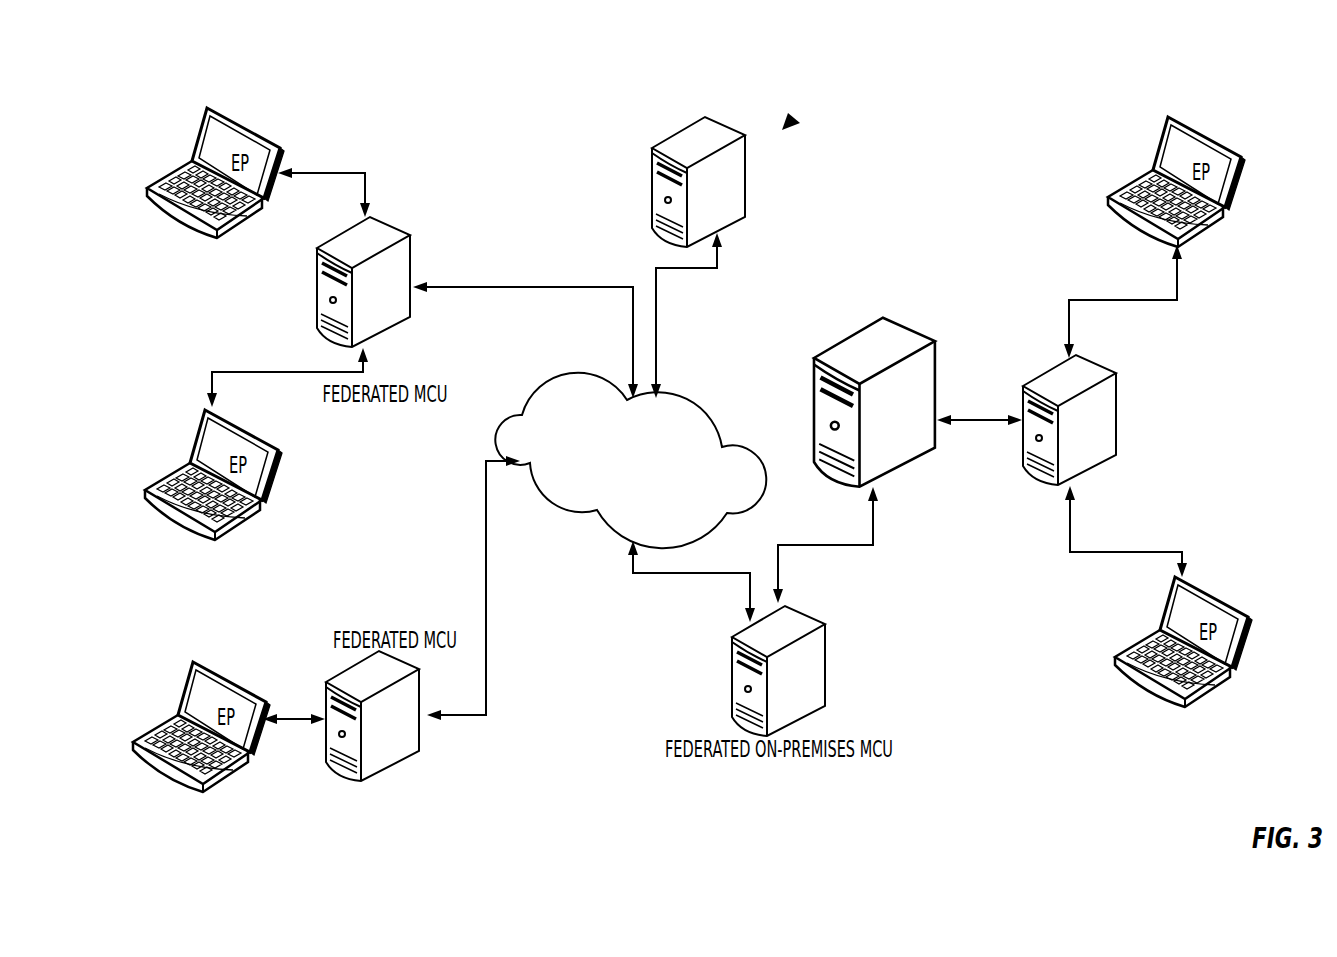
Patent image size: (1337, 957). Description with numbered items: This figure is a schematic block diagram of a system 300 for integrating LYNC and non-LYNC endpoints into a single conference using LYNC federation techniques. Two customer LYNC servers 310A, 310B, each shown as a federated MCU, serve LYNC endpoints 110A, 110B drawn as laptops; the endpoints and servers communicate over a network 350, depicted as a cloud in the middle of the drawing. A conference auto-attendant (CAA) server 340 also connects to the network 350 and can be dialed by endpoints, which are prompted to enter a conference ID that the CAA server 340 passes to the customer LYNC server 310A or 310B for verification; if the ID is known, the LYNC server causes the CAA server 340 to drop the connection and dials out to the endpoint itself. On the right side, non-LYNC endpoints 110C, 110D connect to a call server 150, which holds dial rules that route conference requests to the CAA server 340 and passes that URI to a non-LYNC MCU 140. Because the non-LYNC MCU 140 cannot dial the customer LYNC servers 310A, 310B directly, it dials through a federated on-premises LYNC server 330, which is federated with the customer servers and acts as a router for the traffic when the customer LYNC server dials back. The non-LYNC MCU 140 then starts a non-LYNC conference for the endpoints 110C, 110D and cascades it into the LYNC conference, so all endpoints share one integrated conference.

The endpoint 110A is at (240, 123).
The endpoint 110B is at (245, 520).
The non-LYNC endpoint 110C is at (222, 673).
The non-LYNC endpoint 110D is at (1212, 595).
The non-LYNC MCU 140 is at (908, 330).
The call server 150 is at (1115, 408).
The system 300 is at (792, 118).
The LYNC server 310A is at (400, 227).
The LYNC server 310B is at (400, 760).
The on-premises LYNC server 330 is at (826, 662).
The conference auto-attendant (CAA) server 340 is at (745, 178).
The network 350 is at (667, 400).